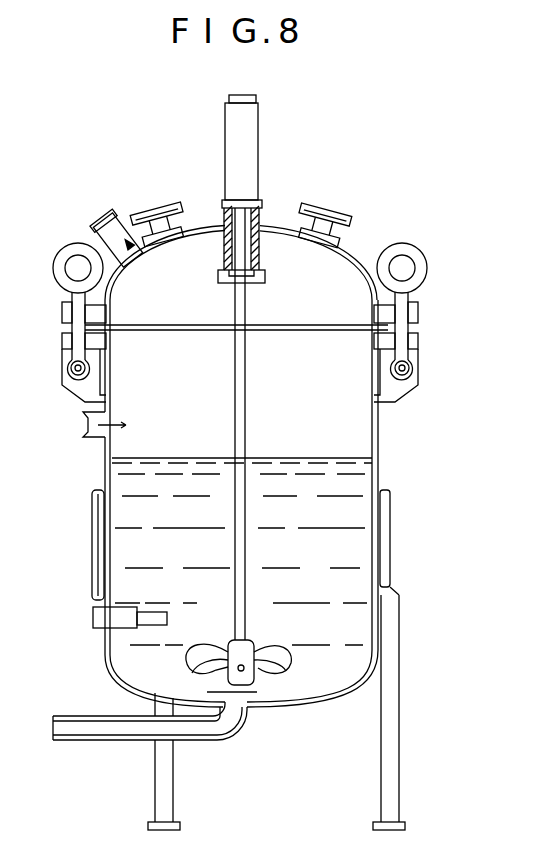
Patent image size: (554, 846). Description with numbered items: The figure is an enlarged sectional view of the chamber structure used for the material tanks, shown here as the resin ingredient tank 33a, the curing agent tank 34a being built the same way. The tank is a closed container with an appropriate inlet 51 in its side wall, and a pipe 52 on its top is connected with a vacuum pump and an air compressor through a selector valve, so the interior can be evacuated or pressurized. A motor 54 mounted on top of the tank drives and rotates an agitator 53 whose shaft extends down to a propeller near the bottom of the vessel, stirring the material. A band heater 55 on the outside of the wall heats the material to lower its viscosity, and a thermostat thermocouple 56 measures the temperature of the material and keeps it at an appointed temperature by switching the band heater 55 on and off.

The resin ingredient tank 33a is at (381, 446).
The curing agent tank 34a is at (241, 467).
The inlet 51 is at (86, 421).
The pipe 52 is at (116, 228).
The agitator 53 is at (267, 664).
The motor 54 is at (260, 140).
The band heater 55 is at (101, 549).
The thermostat thermocouple 56 is at (105, 621).